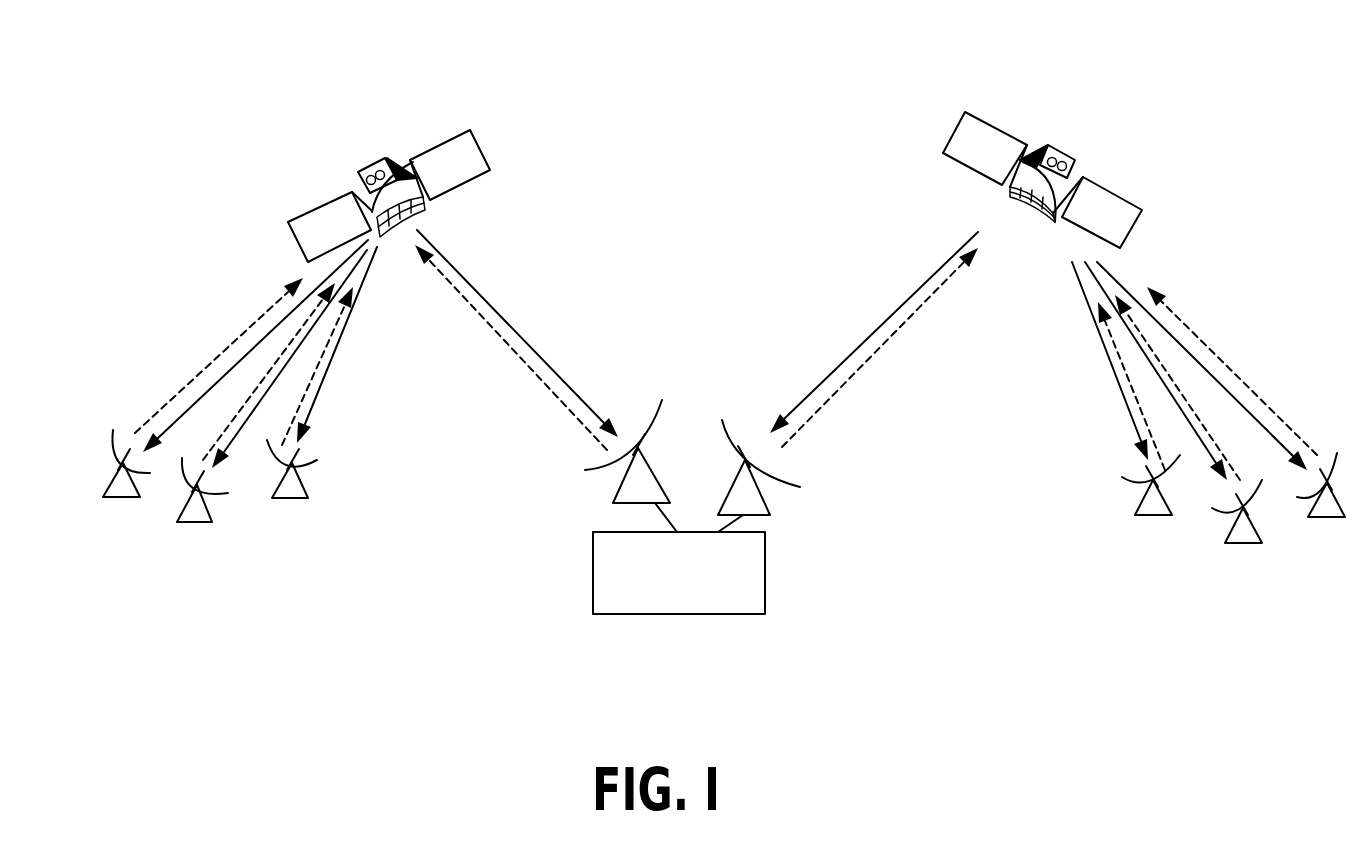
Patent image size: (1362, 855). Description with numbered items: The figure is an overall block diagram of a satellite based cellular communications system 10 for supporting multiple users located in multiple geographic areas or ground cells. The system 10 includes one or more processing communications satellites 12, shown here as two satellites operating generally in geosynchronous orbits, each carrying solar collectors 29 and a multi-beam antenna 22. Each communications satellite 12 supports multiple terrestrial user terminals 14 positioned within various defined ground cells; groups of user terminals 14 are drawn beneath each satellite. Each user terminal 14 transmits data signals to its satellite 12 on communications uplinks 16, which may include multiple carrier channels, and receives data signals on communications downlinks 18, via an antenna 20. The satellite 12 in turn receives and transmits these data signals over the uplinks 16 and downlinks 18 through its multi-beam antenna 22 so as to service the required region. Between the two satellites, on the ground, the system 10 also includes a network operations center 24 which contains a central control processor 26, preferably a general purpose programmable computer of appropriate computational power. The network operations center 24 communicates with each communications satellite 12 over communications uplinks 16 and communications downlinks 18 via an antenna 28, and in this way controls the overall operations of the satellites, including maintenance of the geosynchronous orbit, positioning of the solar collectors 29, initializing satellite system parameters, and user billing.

The satellite based cellular communications system 10 is at (865, 87).
The processing communications satellite 12 is at (387, 162).
The user terminal 14 is at (297, 497).
The communications uplink 16 is at (193, 380).
The communications downlink 18 is at (333, 367).
The antenna 20 is at (297, 463).
The multi-beam antenna 22 is at (422, 212).
The network operations center 24 is at (637, 658).
The central control processor 26 is at (742, 613).
The antenna 28 is at (655, 412).
The solar collector 29 is at (490, 147).